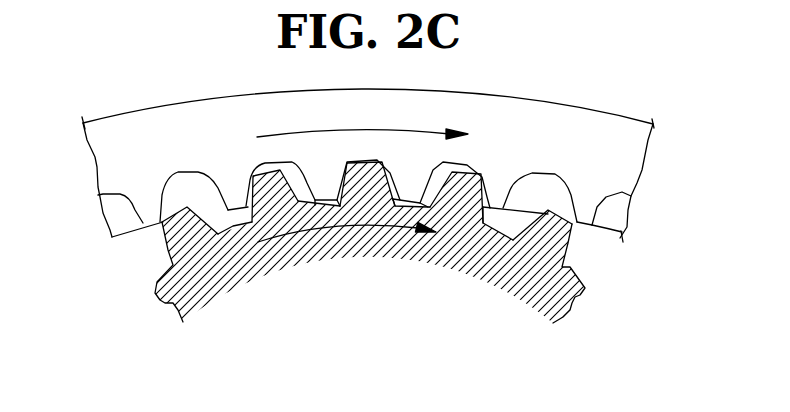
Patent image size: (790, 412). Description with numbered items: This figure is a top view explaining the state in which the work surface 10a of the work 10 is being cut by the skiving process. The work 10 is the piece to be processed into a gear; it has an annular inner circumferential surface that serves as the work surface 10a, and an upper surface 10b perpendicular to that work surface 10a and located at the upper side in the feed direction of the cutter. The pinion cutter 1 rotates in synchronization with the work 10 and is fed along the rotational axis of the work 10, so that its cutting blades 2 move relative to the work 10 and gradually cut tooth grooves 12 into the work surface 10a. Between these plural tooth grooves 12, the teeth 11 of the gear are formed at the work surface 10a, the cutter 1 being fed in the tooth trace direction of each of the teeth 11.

The pinion cutter 1 is at (591, 273).
The cutting blades 2 is at (170, 243).
The work 10 is at (219, 93).
The work surface 10a is at (600, 236).
The upper surface 10b is at (515, 113).
The teeth 11 is at (148, 226).
The tooth grooves 12 is at (180, 185).